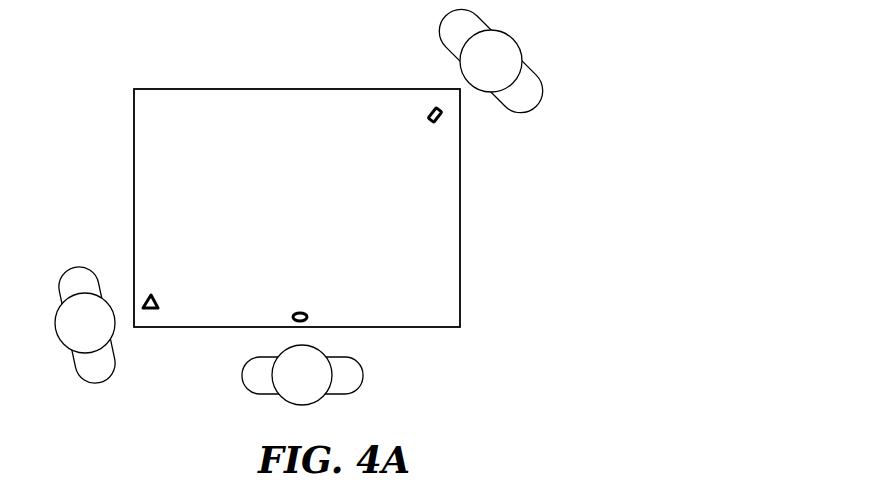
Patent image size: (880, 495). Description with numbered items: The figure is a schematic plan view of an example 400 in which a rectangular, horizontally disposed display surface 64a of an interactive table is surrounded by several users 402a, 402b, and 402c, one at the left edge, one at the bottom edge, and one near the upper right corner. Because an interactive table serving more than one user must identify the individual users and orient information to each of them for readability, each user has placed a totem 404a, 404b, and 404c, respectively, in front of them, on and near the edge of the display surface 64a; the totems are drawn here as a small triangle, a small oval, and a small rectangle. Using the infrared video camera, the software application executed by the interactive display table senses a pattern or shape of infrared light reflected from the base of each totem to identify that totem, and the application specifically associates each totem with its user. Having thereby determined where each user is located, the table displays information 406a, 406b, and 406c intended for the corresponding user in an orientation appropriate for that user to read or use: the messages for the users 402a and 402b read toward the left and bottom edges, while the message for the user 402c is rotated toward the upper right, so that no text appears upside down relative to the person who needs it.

The example 400 is at (479, 329).
The display surface 64a is at (134, 157).
The user 402a is at (70, 266).
The user 402b is at (363, 373).
The user 402c is at (510, 107).
The totem 404a is at (150, 312).
The totem 404b is at (310, 317).
The totem 404c is at (432, 109).
The information 406a is at (193, 307).
The information 406b is at (318, 297).
The information 406c is at (393, 105).